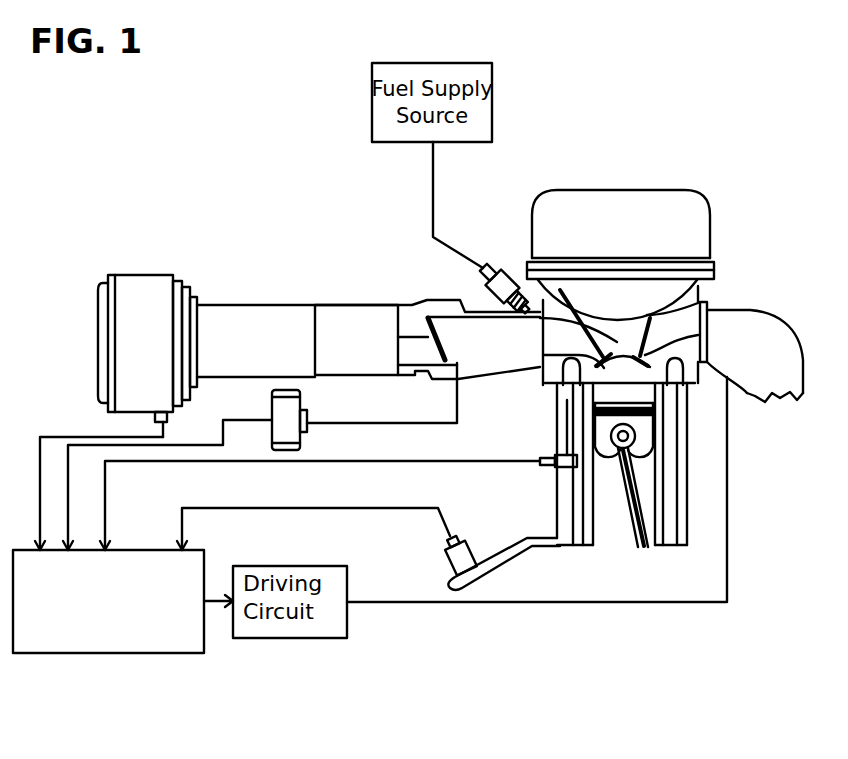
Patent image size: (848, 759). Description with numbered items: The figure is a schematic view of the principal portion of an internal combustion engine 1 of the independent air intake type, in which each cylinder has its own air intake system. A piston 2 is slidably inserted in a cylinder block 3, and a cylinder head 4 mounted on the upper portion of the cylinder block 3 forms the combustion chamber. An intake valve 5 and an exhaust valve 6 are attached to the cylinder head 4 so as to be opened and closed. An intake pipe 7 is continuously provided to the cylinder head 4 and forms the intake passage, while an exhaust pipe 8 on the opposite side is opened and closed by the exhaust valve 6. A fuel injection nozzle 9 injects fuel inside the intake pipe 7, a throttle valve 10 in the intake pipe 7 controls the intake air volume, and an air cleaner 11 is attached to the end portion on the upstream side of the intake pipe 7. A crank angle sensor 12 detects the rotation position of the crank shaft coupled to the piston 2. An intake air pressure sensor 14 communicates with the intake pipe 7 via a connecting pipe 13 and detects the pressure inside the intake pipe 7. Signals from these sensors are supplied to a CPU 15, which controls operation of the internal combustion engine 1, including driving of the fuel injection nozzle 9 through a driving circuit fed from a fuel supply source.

The internal combustion engine 1 is at (303, 290).
The piston 2 is at (647, 435).
The cylinder block 3 is at (687, 527).
The cylinder head 4 is at (672, 213).
The intake valve 5 is at (597, 300).
The exhaust valve 6 is at (700, 333).
The intake pipe 7 is at (497, 367).
The exhaust pipe 8 is at (775, 373).
The fuel injection nozzle 9 is at (490, 258).
The throttle valve 10 is at (387, 330).
The air cleaner 11 is at (155, 278).
The crank angle sensor 12 is at (468, 540).
The connecting pipe 13 is at (407, 423).
The intake air pressure sensor 14 is at (272, 392).
The CPU 15 is at (85, 633).